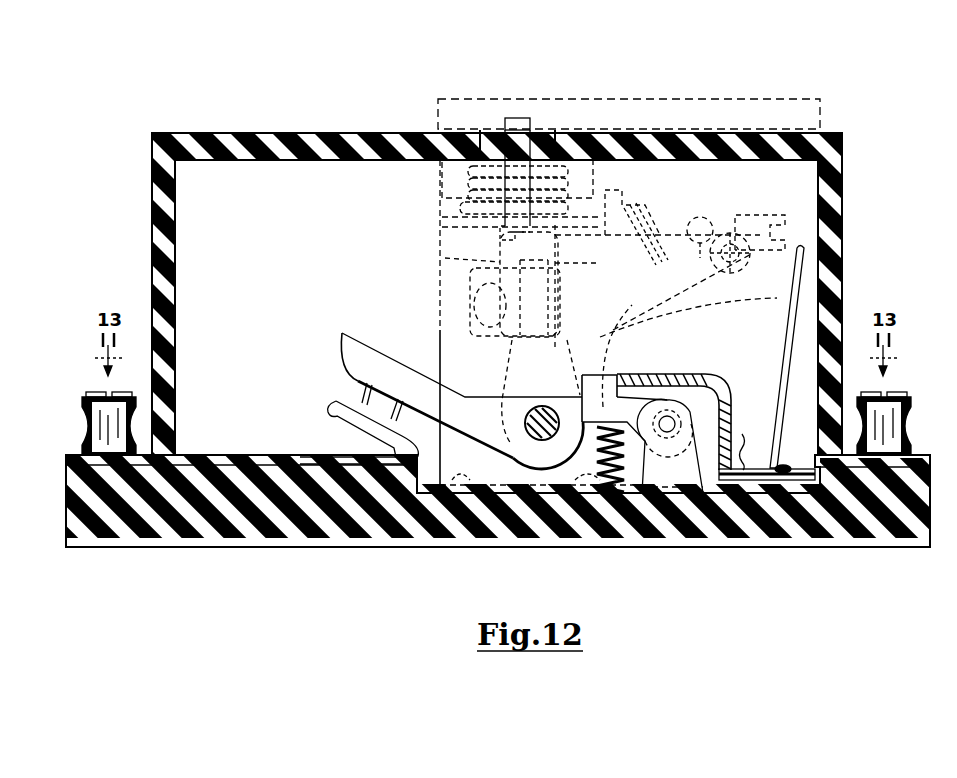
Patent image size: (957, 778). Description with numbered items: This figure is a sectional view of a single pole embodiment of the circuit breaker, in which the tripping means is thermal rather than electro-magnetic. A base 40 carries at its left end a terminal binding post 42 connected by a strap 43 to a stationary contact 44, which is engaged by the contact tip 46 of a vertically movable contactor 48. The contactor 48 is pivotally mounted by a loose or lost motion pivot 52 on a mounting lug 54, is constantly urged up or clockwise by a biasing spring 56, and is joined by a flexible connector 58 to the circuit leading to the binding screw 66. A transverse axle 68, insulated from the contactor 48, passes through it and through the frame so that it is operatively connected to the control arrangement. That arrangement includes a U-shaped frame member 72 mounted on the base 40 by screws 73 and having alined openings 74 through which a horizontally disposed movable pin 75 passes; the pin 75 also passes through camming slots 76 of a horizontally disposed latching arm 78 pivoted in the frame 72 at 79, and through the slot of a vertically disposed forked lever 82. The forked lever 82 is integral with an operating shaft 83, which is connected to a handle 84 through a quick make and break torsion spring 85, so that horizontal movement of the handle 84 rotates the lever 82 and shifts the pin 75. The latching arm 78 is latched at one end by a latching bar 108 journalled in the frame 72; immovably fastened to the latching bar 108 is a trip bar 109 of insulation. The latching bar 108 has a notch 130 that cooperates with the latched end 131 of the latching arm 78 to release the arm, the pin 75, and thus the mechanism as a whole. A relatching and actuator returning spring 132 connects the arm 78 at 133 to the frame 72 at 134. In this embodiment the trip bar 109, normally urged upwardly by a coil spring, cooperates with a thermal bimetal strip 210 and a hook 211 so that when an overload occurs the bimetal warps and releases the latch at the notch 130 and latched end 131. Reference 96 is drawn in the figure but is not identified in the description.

The base 40 is at (415, 545).
The terminal binding post 42 is at (82, 429).
The strap 43 is at (280, 458).
The stationary contact 44 is at (360, 400).
The contact tip 46 is at (365, 386).
The contactor 48 is at (341, 355).
The lost motion pivot 52 is at (675, 423).
The mounting lug 54 is at (694, 452).
The biasing spring 56 is at (604, 458).
The flexible connector 58 is at (688, 374).
The binding screw 66 is at (913, 407).
The transverse axle 68 is at (539, 442).
The U-shaped frame member 72 is at (446, 305).
The screw 73 is at (482, 473).
The alined opening 74 is at (446, 259).
The movable shaft or pin 75 is at (512, 342).
The camming slot 76 is at (466, 290).
The latching arm 78 is at (571, 264).
The pivot of latching arm 79 is at (570, 344).
The forked lever 82 is at (498, 252).
The operating shaft 83 is at (511, 118).
The handle 84 is at (638, 105).
The quick make and break torsion spring 85 is at (442, 178).
The lever arm 96 is at (515, 380).
The latching bar 108 is at (755, 222).
The trip bar 109 is at (752, 281).
The notch 130 is at (700, 292).
The latched end 131 is at (707, 218).
The relatching and actuator returning spring 132 is at (648, 207).
The spring connection on arm 133 is at (643, 251).
The spring connection on frame 134 is at (632, 187).
The thermal bimetal strip 210 is at (755, 443).
The hook 211 is at (796, 345).